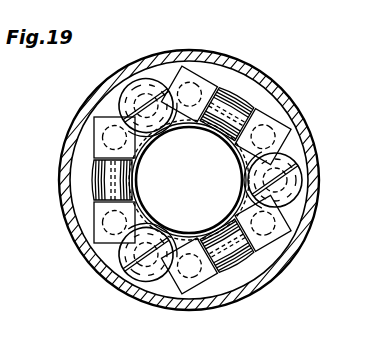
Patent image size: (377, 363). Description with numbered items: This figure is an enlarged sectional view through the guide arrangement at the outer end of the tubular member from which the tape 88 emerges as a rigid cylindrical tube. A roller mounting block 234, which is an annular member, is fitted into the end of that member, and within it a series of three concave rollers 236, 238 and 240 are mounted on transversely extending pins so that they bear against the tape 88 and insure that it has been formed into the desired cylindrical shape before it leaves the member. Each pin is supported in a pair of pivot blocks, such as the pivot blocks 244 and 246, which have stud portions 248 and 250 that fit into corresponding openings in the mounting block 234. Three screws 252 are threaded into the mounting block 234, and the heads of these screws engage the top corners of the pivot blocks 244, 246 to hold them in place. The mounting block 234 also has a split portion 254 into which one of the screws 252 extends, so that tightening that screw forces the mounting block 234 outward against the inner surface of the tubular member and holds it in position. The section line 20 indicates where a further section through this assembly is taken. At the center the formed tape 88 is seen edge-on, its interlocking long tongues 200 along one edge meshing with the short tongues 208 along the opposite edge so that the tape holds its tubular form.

The section line 20- 20 is at (116, 27).
The tape 88 is at (156, 227).
The long tongues 200 is at (149, 147).
The short tongues 208 is at (218, 139).
The roller mounting block 234 is at (285, 252).
The concave roller 236 is at (94, 177).
The concave roller 238 is at (237, 103).
The concave roller 240 is at (226, 262).
The pivot block 244 is at (70, 129).
The pivot block 246 is at (95, 225).
The stud portion 248 is at (94, 141).
The stud portion 250 is at (299, 186).
The screws 252 is at (148, 79).
The split portion 254 is at (118, 98).